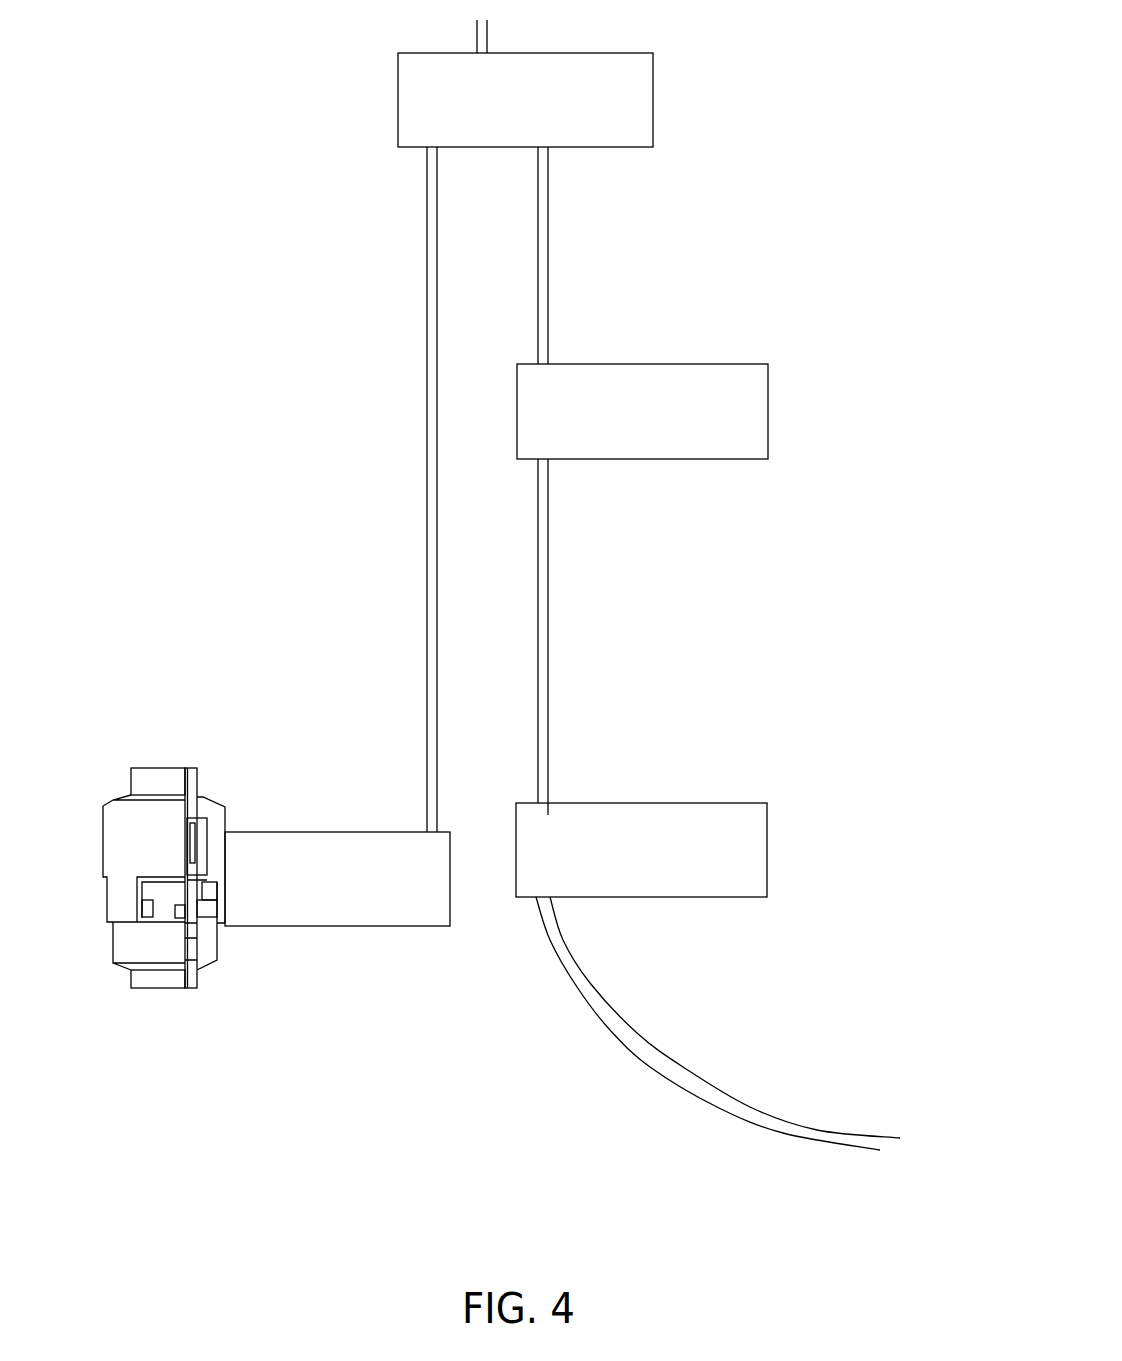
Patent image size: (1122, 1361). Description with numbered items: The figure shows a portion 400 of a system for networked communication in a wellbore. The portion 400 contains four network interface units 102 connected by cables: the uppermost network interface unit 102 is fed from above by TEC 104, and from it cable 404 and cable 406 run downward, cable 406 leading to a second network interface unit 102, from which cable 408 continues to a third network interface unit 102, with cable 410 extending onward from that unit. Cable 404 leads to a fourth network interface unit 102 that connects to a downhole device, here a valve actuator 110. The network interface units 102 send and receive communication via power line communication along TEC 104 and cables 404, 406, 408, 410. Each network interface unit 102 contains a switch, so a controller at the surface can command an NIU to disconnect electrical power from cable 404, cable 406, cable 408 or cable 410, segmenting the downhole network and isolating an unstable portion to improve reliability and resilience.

The network interface unit 102 is at (678, 863).
The TEC 104 is at (477, 33).
The valve actuator 110 is at (158, 768).
The portion of the system 400 is at (292, 1075).
The cable 404 is at (427, 463).
The cable 406 is at (549, 240).
The cable 408 is at (548, 555).
The cable 410 is at (577, 987).